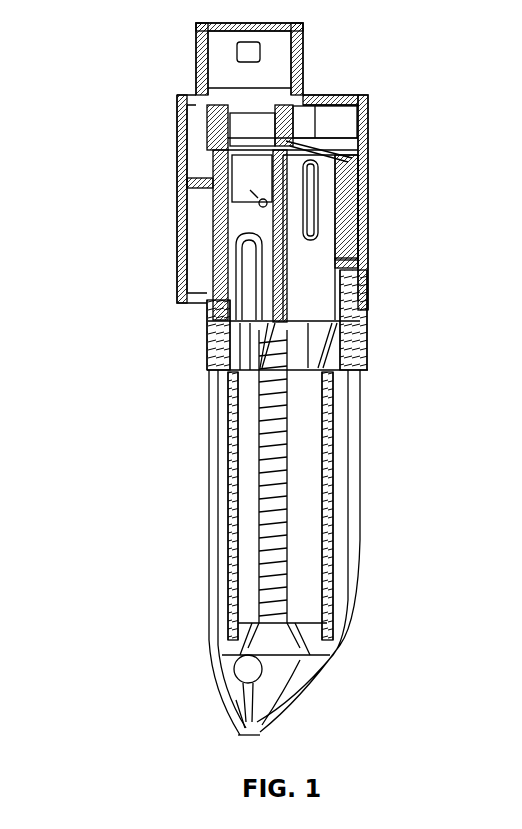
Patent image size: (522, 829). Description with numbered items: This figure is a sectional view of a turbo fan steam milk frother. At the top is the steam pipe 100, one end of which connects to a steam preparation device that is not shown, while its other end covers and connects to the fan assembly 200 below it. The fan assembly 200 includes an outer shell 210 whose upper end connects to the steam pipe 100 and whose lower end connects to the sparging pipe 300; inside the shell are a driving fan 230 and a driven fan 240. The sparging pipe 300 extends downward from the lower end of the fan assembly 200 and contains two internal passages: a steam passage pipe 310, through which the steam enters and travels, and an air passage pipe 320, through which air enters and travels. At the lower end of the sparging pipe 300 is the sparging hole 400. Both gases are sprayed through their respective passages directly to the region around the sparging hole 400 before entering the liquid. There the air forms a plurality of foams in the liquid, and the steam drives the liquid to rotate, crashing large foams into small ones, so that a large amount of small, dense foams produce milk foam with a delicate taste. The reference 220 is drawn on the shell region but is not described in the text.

The steam pipe 100 is at (213, 62).
The fan assembly 200 is at (251, 232).
The outer shell 210 is at (177, 145).
The inclined valve surface 220 is at (313, 145).
The driving fan 230 is at (260, 203).
The driven fan 240 is at (312, 215).
The sparging pipe 300 is at (292, 532).
The steam passage pipe 310 is at (247, 435).
The air passage pipe 320 is at (299, 522).
The sparging hole 400 is at (250, 710).